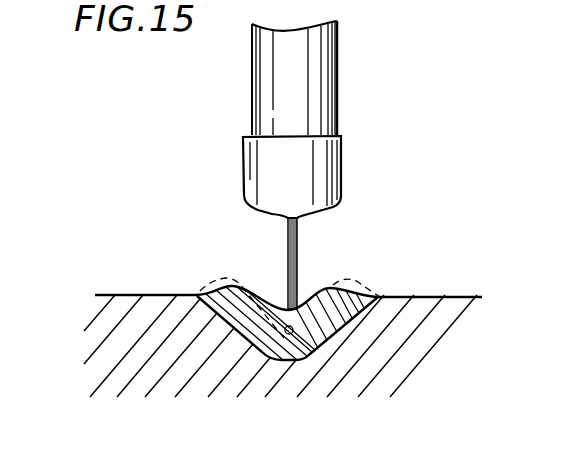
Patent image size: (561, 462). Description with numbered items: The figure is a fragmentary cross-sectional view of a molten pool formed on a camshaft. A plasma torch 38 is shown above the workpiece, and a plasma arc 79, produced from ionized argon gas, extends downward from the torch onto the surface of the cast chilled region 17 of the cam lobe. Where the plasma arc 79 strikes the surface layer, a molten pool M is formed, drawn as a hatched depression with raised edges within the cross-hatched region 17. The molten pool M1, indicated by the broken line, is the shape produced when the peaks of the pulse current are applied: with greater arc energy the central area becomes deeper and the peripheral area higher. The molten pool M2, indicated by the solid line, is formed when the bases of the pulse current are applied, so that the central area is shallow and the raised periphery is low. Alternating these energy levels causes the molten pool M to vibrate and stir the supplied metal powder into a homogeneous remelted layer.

The plasma torch 38 is at (337, 66).
The plasma arc 79 is at (298, 243).
The cast chilled region 17 is at (445, 297).
The molten pool M is at (246, 276).
The molten pool at pulse peaks M1 is at (291, 334).
The molten pool at pulse bases M2 is at (332, 283).